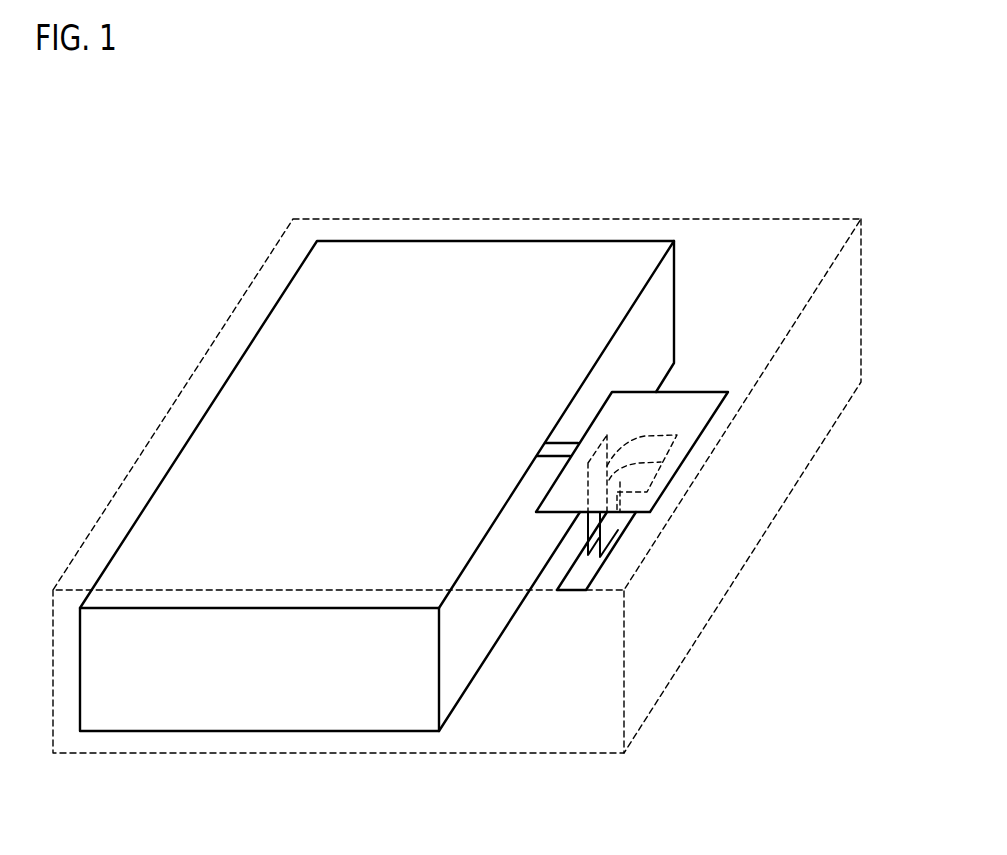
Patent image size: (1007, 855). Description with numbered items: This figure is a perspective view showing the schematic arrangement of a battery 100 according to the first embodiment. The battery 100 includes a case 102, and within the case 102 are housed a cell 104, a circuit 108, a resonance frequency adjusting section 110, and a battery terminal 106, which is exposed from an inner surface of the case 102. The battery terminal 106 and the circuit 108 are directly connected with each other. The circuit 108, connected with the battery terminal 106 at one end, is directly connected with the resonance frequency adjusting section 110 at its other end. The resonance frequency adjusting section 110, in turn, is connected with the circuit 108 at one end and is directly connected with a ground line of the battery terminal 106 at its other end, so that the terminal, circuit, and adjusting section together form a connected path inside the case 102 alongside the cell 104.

The battery 100 is at (683, 168).
The case 102 is at (476, 754).
The cell 104 is at (310, 732).
The battery terminal 106 is at (613, 552).
The circuit 108 is at (700, 423).
The resonance frequency adjusting section 110 is at (682, 466).